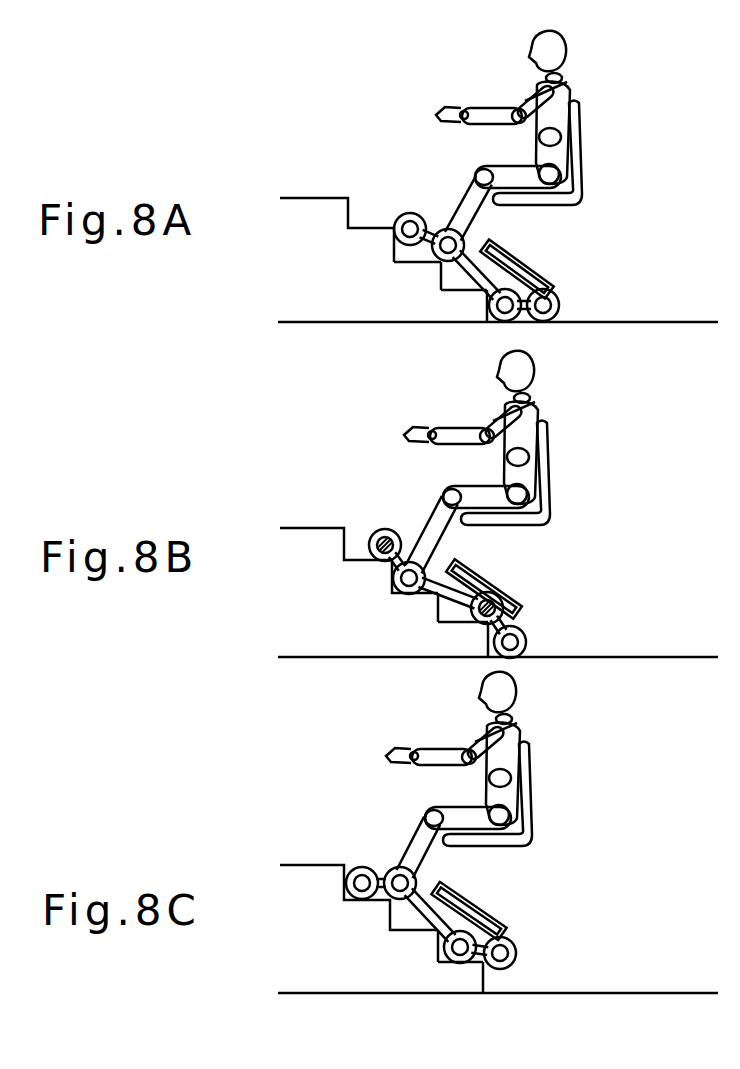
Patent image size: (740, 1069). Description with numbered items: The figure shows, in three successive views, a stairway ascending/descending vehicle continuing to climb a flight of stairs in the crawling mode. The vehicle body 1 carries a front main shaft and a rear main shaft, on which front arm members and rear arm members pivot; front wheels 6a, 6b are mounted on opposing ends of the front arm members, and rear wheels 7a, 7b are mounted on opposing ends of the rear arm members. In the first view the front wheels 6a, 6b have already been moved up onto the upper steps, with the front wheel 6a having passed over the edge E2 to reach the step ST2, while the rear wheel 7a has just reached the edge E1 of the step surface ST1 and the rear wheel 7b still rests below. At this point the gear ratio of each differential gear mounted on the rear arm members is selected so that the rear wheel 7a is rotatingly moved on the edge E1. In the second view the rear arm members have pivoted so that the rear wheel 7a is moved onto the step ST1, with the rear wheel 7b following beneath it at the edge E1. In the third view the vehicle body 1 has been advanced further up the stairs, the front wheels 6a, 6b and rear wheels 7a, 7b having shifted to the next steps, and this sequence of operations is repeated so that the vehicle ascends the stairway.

In FIG. 8A, the vehicle body 1 is at (522, 260).
In FIG. 8B, the vehicle body 1 is at (512, 593).
In FIG. 8C, the vehicle body 1 is at (468, 911).
In FIG. 8A, the front wheel 6a is at (410, 229).
In FIG. 8B, the front wheel 6a is at (385, 545).
In FIG. 8C, the front wheel 6a is at (358, 902).
In FIG. 8A, the front wheel 6b is at (448, 245).
In FIG. 8B, the front wheel 6b is at (409, 578).
In FIG. 8C, the front wheel 6b is at (388, 902).
In FIG. 8A, the rear wheel 7a is at (507, 315).
In FIG. 8B, the rear wheel 7a is at (477, 620).
In FIG. 8C, the rear wheel 7a is at (458, 965).
In FIG. 8A, the rear wheel 7b is at (560, 302).
In FIG. 8B, the rear wheel 7b is at (527, 643).
In FIG. 8C, the rear wheel 7b is at (516, 950).
In FIG. 8A, the step surface ST1 is at (437, 293).
In FIG. 8B, the step surface ST1 is at (443, 618).
In FIG. 8C, the step surface ST1 is at (473, 967).
In FIG. 8A, the step ST2 is at (412, 262).
In FIG. 8A, the edge E1 is at (487, 292).
In FIG. 8B, the edge E1 is at (486, 640).
In FIG. 8C, the edge E1 is at (485, 977).
In FIG. 8A, the edge E2 is at (440, 266).
In FIG. 8C, the edge E2 is at (437, 946).